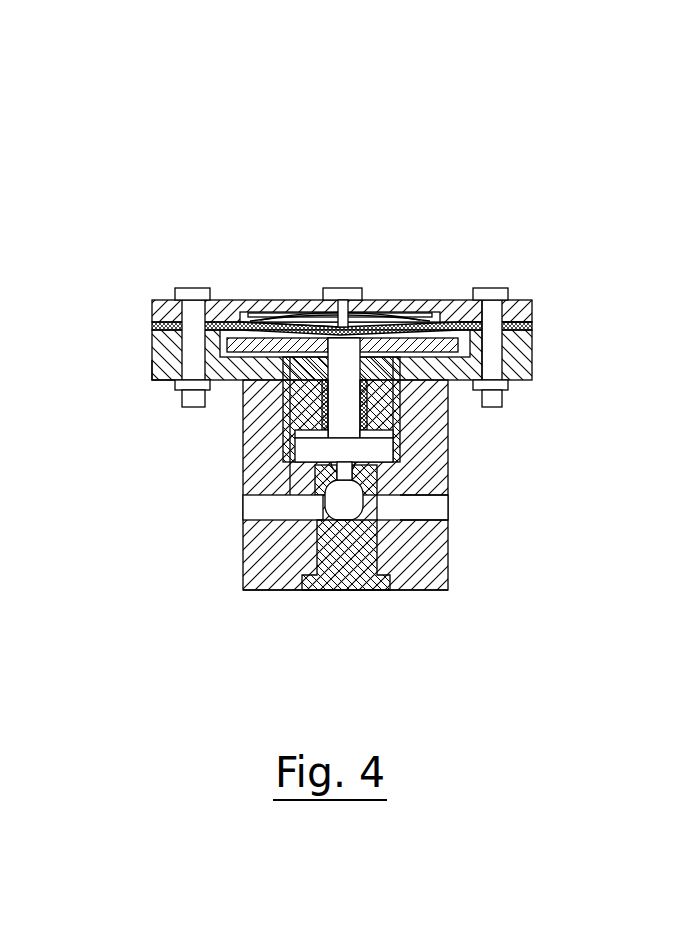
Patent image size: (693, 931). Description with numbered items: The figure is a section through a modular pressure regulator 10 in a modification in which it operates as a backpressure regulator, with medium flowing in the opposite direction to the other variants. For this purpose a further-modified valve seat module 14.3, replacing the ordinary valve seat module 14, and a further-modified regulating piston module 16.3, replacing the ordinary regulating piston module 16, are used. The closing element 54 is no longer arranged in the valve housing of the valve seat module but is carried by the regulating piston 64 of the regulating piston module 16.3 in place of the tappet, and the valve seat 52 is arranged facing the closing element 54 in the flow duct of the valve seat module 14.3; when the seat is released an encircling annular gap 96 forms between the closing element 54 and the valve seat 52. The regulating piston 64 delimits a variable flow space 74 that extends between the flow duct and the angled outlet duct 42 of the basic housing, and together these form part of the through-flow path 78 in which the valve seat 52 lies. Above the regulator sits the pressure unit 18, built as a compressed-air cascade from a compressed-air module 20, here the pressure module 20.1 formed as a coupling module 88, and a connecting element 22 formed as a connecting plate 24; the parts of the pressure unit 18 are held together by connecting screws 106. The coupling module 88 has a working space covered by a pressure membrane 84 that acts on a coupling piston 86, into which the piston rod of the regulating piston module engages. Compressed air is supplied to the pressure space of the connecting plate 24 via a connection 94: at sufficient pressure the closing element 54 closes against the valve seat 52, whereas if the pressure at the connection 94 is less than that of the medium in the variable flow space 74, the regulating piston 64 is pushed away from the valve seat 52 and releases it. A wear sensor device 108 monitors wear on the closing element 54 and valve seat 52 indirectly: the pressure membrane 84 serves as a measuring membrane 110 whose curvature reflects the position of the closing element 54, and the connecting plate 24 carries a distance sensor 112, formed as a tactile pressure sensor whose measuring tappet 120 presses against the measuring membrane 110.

The modular pressure regulator 10 is at (440, 146).
The valve seat module 14 is at (328, 600).
The further-modified valve seat module 14.3 is at (365, 592).
The regulating piston module 16 is at (283, 412).
The further-modified regulating piston module 16.3 is at (297, 430).
The pressure unit 18 is at (146, 346).
The compressed-air module 20 is at (542, 365).
The pressure module 20.1 is at (163, 366).
The connecting element 22 is at (166, 282).
The connecting plate 24 is at (530, 300).
The outlet duct 42 is at (430, 513).
The valve seat 52 is at (326, 468).
The closing element 54 is at (378, 498).
The regulating piston 64 is at (378, 448).
The variable flow space 74 is at (367, 475).
The through-flow path 78 is at (263, 510).
The pressure membrane 84 is at (246, 300).
The coupling piston 86 is at (273, 300).
The coupling module 88 is at (540, 344).
The connection 94 is at (295, 300).
The annular gap 96 is at (308, 478).
The connecting screws 106 is at (498, 289).
The wear sensor device 108 is at (366, 246).
The measuring membrane 110 is at (417, 298).
The distance sensor 112 is at (347, 281).
The measuring tappet 120 is at (380, 298).